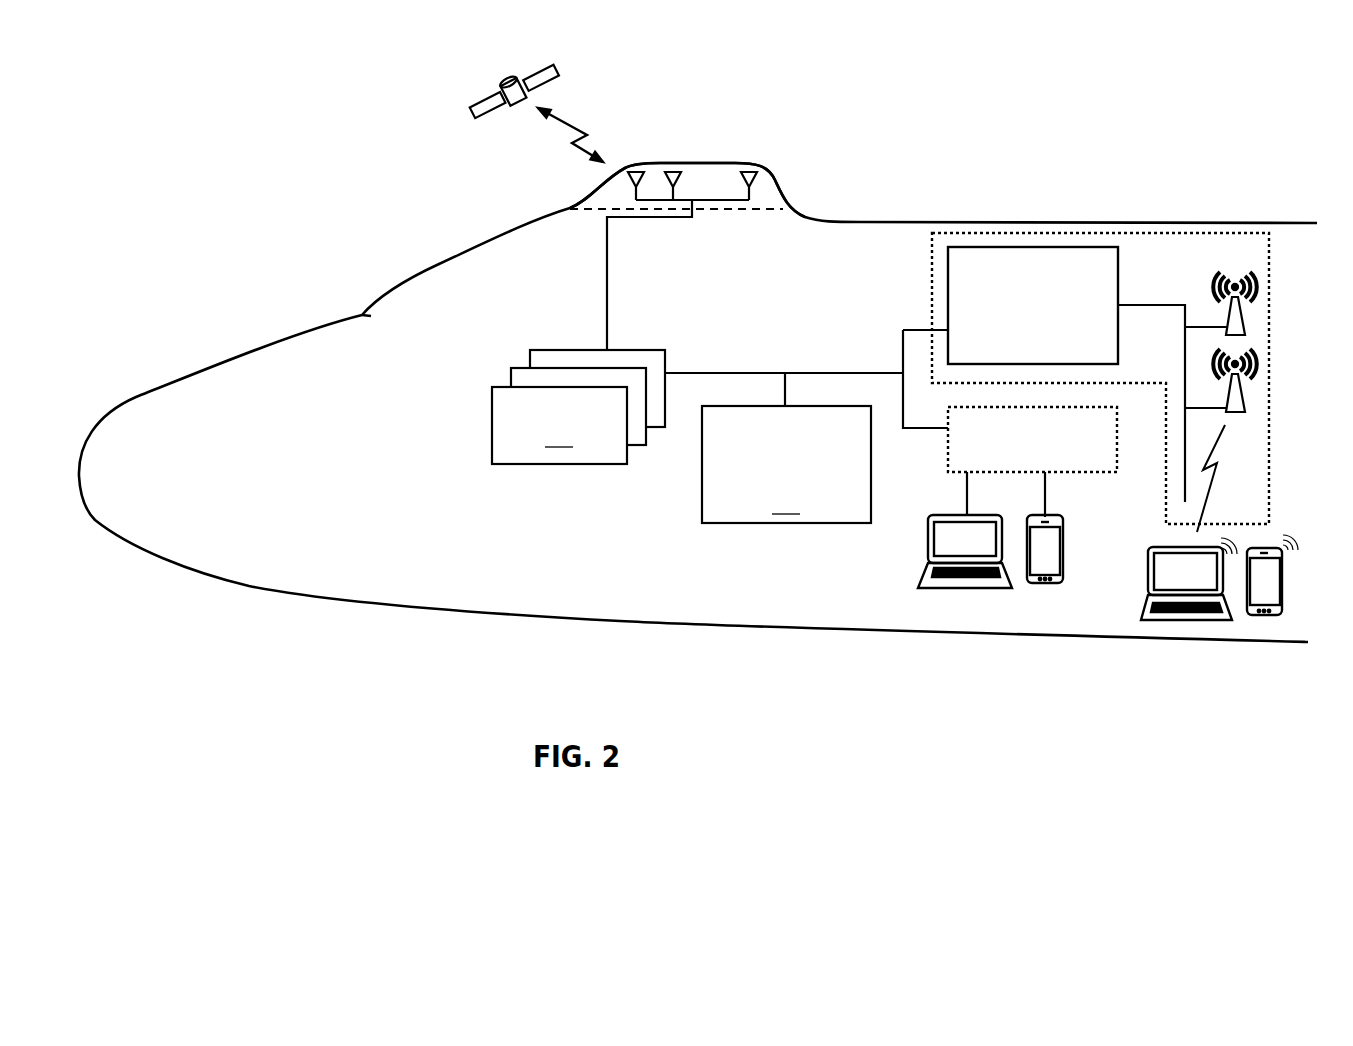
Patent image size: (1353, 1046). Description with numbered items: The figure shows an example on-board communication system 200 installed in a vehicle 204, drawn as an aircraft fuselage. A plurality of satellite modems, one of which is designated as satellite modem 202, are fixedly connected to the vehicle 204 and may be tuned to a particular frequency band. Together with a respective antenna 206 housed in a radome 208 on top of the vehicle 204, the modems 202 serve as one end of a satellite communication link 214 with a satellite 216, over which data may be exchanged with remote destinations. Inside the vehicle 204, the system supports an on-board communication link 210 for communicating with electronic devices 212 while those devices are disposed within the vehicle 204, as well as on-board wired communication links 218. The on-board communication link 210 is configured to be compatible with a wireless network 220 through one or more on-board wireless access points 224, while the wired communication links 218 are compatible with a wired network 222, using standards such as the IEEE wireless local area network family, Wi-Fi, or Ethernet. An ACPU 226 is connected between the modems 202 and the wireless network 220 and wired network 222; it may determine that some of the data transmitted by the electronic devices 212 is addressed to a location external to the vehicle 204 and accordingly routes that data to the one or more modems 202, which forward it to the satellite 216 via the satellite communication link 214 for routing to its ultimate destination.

The on-board communication system 200 is at (1165, 98).
The satellite modem 202 is at (697, 407).
The vehicle 204 is at (264, 592).
The antenna 206 is at (673, 168).
The radome 208 is at (740, 163).
The on-board communication link 210 is at (1217, 478).
The electronic devices 212 is at (1042, 588).
The satellite communication link 214 is at (570, 122).
The satellite 216 is at (511, 76).
The on-board wired communication link 218 is at (965, 480).
The wireless network 220 is at (1176, 233).
The wired network 222 is at (1063, 473).
The on-board wireless access point 224 is at (1247, 413).
The ACPU 226 is at (786, 448).